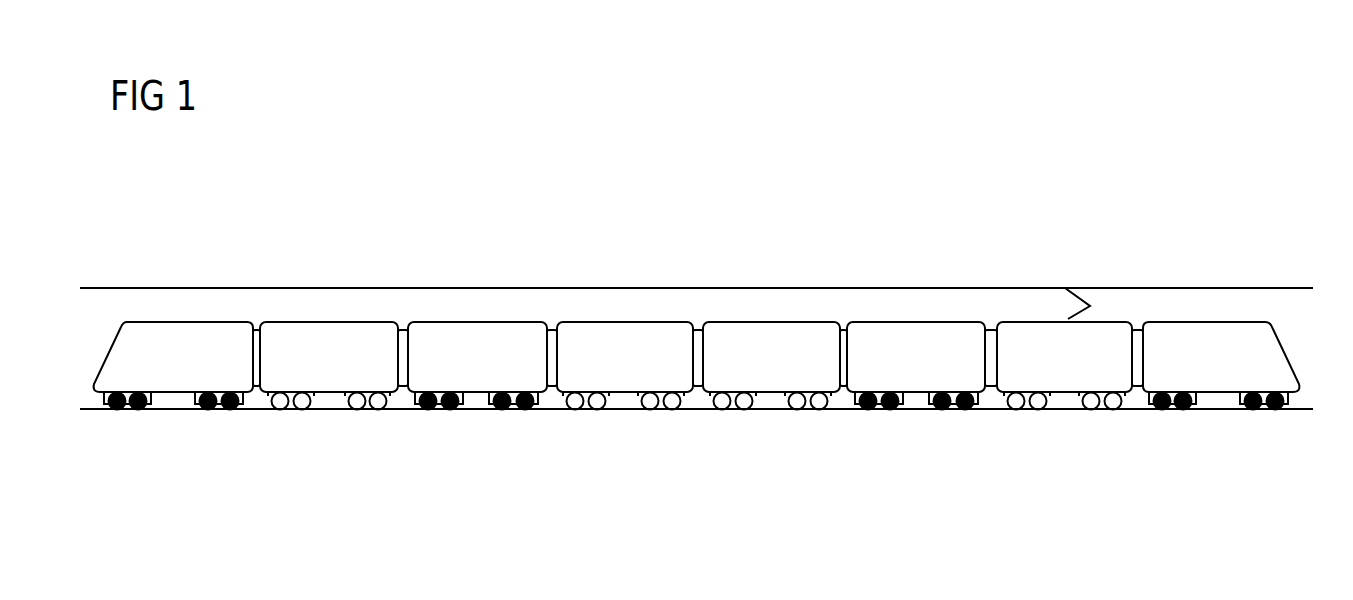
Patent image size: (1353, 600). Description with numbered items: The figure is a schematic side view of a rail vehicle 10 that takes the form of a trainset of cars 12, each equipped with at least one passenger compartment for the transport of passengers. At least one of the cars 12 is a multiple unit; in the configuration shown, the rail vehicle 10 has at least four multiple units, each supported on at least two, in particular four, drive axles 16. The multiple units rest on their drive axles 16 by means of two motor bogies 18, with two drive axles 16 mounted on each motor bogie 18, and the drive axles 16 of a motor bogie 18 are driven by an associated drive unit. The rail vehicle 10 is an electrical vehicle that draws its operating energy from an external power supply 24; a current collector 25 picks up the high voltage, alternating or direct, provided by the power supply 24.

The rail vehicle 10 is at (1259, 304).
The car 12 is at (193, 330).
The drive axle 16 is at (117, 410).
The motor bogie 18 is at (187, 420).
The external power supply 24 is at (918, 287).
The current collector 25 is at (1089, 287).